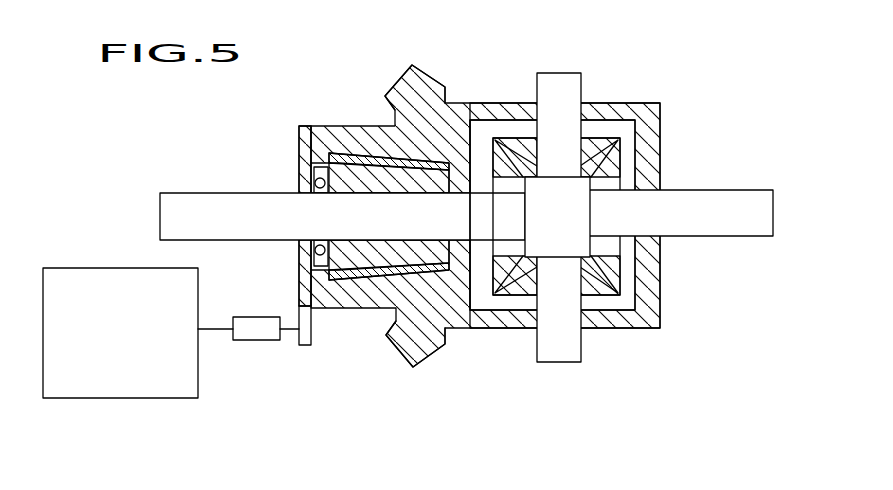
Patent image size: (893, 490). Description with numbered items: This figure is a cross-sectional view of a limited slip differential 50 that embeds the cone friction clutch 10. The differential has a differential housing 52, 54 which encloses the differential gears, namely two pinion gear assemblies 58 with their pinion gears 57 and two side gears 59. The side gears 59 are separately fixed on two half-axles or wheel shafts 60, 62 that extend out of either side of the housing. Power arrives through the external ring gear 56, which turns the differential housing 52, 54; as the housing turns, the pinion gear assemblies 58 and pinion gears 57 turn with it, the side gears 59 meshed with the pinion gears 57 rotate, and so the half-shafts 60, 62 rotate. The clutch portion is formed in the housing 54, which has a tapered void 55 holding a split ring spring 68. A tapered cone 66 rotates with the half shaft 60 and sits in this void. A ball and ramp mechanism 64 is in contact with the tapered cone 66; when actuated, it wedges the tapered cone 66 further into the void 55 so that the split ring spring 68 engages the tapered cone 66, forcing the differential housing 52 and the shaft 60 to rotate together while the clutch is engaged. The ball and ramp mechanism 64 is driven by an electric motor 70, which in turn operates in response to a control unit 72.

The cone friction clutch 10 is at (207, 142).
The limited slip differential 50 is at (718, 113).
The differential housing 52 is at (645, 315).
The differential housing 54 is at (356, 298).
The tapered void 55 is at (312, 247).
The external ring gear 56 is at (420, 86).
The pinion gears 57 is at (595, 143).
The pinion gear assemblies 58 is at (557, 90).
The side gears 59 is at (612, 264).
The half-axle 60 is at (203, 203).
The half-axle 62 is at (762, 208).
The ball and ramp mechanism 64 is at (300, 117).
The tapered cone 66 is at (358, 172).
The split ring spring 68 is at (343, 156).
The electric motor 70 is at (256, 332).
The control unit 72 is at (137, 400).